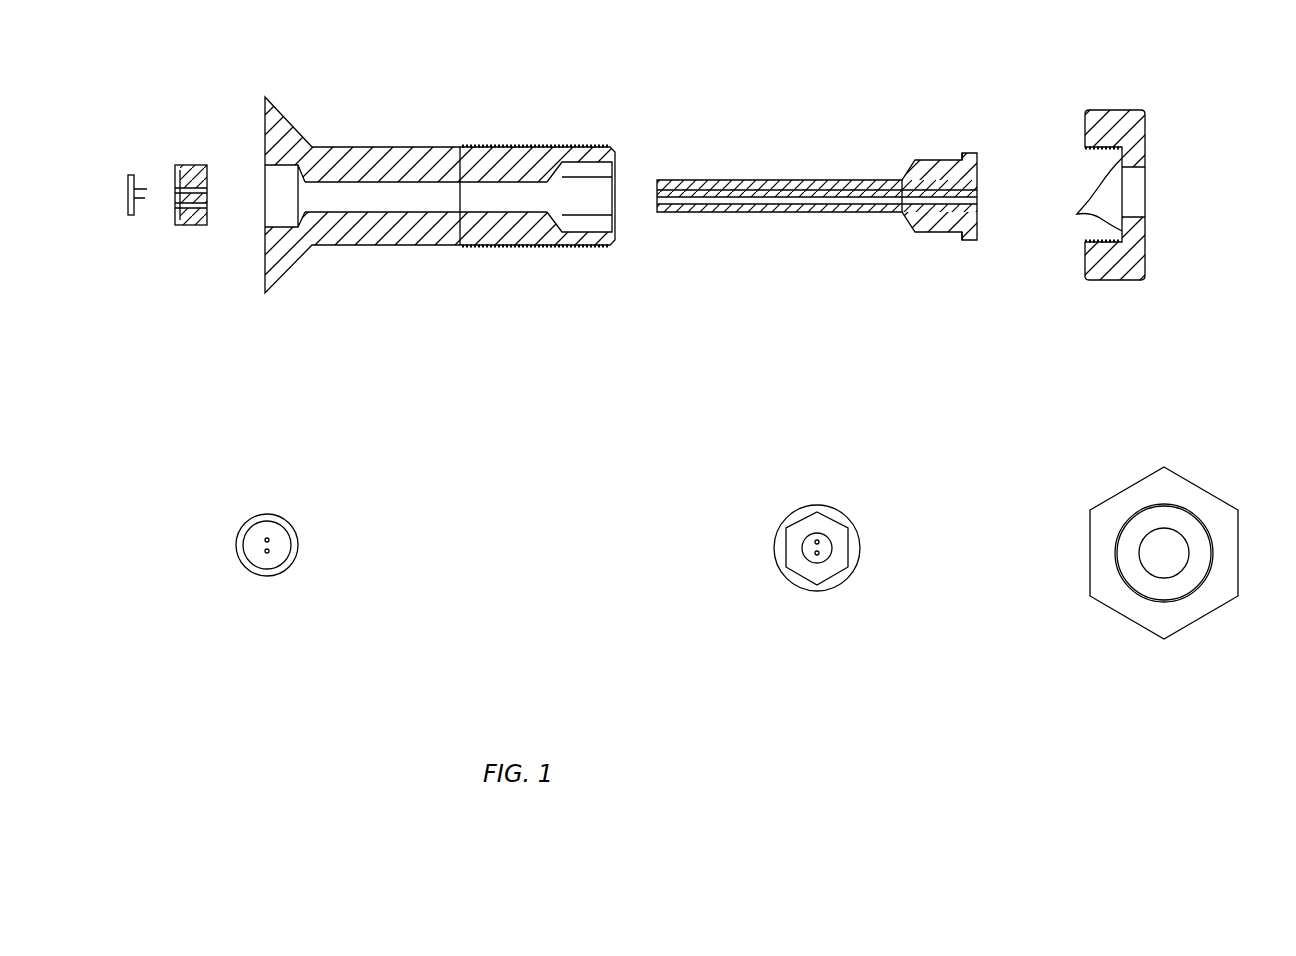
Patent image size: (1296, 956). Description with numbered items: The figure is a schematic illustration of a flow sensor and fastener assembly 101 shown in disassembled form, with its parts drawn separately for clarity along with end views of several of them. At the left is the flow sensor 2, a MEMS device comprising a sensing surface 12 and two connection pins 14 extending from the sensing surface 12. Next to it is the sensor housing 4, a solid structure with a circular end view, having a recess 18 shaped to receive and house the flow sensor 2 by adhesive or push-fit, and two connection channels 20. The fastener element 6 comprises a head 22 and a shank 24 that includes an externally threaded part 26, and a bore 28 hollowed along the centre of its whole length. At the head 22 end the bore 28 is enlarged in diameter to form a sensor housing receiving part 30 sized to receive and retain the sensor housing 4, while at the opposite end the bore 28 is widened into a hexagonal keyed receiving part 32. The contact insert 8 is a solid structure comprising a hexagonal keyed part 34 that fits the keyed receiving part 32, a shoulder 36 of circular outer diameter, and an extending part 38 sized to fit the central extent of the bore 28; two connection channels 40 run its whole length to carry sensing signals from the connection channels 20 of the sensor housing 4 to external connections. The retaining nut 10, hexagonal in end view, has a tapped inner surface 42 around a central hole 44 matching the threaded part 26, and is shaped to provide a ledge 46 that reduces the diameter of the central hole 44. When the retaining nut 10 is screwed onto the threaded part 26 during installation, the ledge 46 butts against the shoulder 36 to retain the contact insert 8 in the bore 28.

The flow sensor and fastener assembly 101 is at (1221, 72).
The flow sensor 2 is at (125, 151).
The sensing surface 12 is at (127, 213).
The connection pins 14 is at (135, 189).
The sensor housing 4 is at (197, 140).
The recess 18 is at (178, 216).
The connection channels 20 is at (200, 188).
The fastener element 6 is at (455, 107).
The head 22 is at (286, 137).
The shank 24 is at (350, 147).
The externally threaded part 26 is at (533, 156).
The bore 28 is at (418, 192).
The sensor housing receiving part 30 is at (288, 212).
The keyed receiving part 32 is at (585, 202).
The contact insert 8 is at (835, 140).
The keyed part 34 is at (941, 222).
The shoulder 36 is at (961, 160).
The extending part 38 is at (800, 206).
The connection channels 40 is at (712, 191).
The retaining nut 10 is at (1115, 85).
The tapped inner surface 42 is at (1090, 154).
The central hole 44 is at (1135, 195).
The ledge 46 is at (1078, 211).